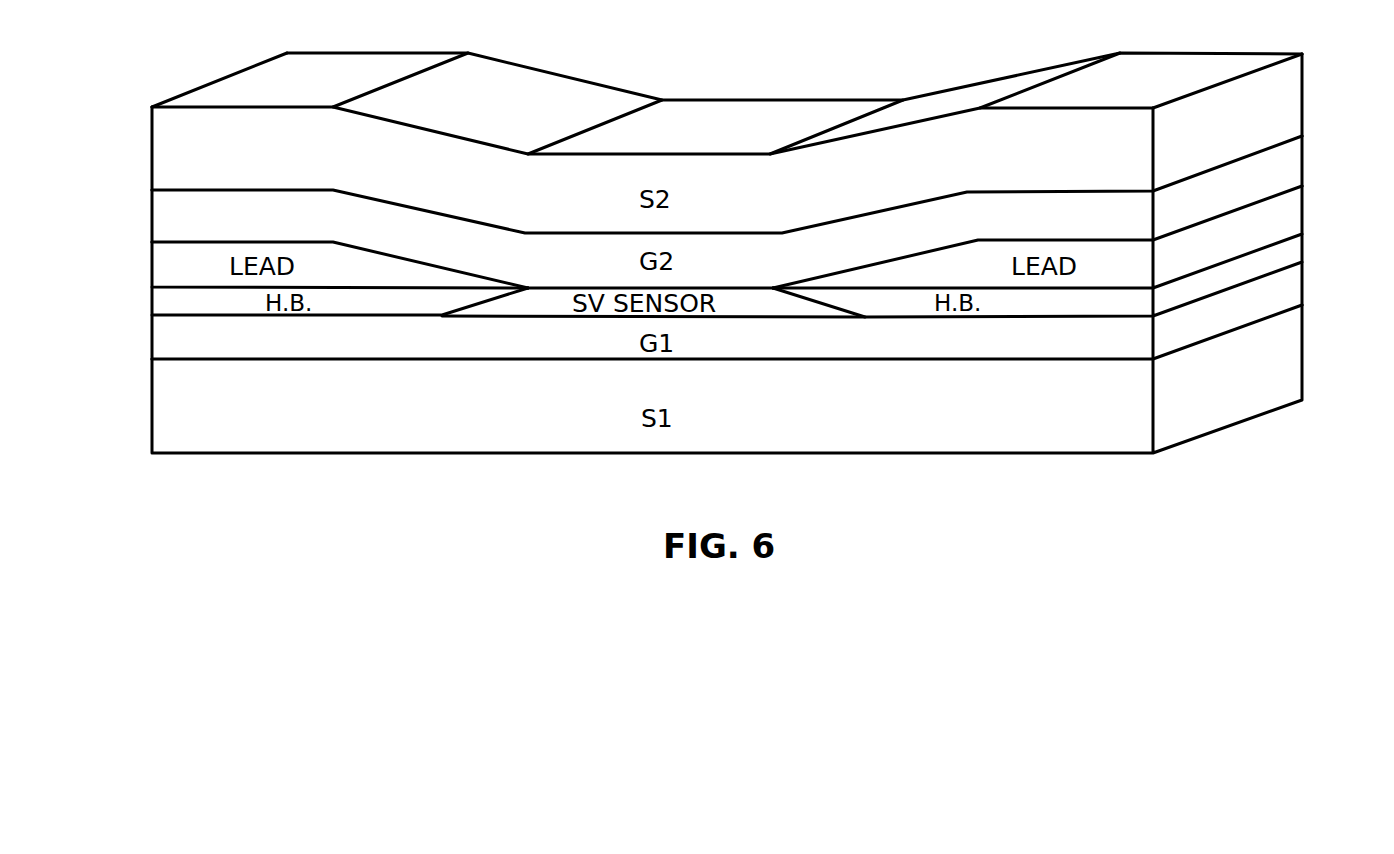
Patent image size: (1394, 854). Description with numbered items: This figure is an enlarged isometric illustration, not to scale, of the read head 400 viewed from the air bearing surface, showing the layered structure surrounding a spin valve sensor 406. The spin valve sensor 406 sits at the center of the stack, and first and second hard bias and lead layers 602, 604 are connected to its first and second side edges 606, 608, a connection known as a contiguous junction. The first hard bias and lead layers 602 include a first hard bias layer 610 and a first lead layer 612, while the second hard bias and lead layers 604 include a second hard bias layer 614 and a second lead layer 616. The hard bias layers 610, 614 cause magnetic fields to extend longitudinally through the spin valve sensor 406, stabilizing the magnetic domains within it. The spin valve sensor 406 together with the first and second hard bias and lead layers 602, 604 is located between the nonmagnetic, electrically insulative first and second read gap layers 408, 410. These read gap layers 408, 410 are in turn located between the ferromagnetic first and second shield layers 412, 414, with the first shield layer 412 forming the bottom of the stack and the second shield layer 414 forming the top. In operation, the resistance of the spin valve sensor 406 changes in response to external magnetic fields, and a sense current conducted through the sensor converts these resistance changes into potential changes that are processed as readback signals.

The read head 400 is at (812, 53).
The spin valve sensor 406 is at (558, 288).
The first read gap layer 408 is at (1018, 345).
The second read gap layer 410 is at (392, 223).
The first shield layer 412 is at (318, 456).
The second shield layer 414 is at (577, 88).
The first hard bias and lead layers 602 is at (301, 278).
The second hard bias and lead layers 604 is at (1076, 273).
The first side edge 606 is at (475, 303).
The second side edge 608 is at (837, 303).
The first hard bias layer 610 is at (340, 322).
The first lead layer 612 is at (193, 260).
The second hard bias layer 614 is at (1092, 298).
The second lead layer 616 is at (1100, 262).